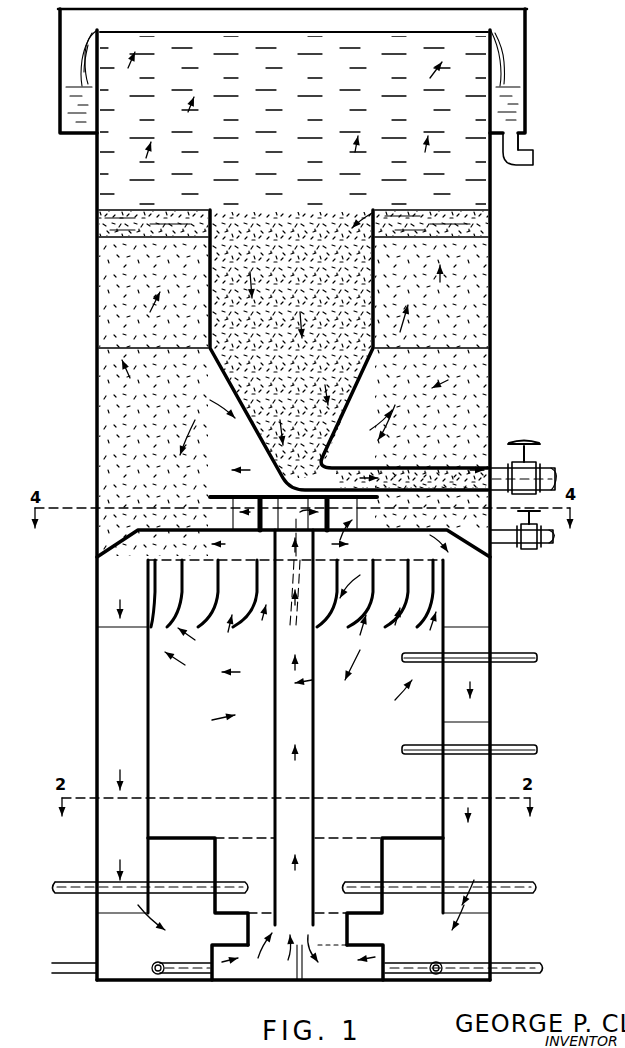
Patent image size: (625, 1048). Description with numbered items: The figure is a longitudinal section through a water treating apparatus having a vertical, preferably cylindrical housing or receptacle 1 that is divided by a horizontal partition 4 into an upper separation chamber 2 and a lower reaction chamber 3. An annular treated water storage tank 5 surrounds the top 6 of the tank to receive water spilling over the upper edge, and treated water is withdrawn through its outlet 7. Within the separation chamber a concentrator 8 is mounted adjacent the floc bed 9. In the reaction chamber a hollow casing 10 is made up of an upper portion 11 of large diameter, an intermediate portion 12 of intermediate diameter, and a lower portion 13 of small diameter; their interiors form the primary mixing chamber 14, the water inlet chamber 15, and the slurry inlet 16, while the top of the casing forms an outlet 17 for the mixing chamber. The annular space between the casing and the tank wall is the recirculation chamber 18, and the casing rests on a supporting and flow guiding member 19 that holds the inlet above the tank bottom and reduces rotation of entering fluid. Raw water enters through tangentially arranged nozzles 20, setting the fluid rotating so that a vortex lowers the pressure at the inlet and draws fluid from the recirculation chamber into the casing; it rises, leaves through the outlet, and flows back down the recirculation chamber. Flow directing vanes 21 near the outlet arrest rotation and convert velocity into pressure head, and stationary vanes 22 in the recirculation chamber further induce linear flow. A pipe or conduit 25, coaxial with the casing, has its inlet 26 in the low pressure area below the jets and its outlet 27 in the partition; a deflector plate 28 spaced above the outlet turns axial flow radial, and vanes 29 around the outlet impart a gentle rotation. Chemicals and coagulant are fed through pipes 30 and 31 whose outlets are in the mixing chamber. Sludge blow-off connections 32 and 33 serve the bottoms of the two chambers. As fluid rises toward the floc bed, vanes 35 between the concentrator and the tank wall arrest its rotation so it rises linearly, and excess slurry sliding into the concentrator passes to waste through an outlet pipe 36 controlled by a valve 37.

The vertical housing or receptacle 1 is at (492, 288).
The upper separation chamber 2 is at (472, 385).
The lower reaction chamber 3 is at (478, 610).
The horizontal partition 4 is at (494, 568).
The annular treated water storage tank 5 is at (527, 68).
The top 6 is at (495, 30).
The outlet 7 is at (525, 152).
The concentrator 8 is at (213, 222).
The floc bed 9 is at (475, 229).
The hollow casing 10 is at (447, 688).
The upper portion 11 is at (447, 722).
The intermediate portion 12 is at (386, 856).
The lower portion 13 is at (350, 930).
The primary mixing chamber 14 is at (392, 698).
The water inlet chamber 15 is at (344, 866).
The slurry inlet 16 is at (344, 940).
The outlet 17 is at (150, 565).
The recirculation chamber 18 is at (132, 742).
The supporting and flow guiding member 19 is at (262, 965).
The tangentially arranged nozzles 20 is at (68, 880).
The flow directing vanes 21 is at (220, 596).
The stationary vanes 22 is at (118, 693).
The pipe or conduit 25 is at (315, 660).
The inlet 26 is at (298, 918).
The outlet 27 is at (304, 532).
The deflector plate 28 is at (210, 494).
The vanes 29 is at (240, 515).
The pipe 30 is at (538, 746).
The pipe 31 is at (527, 652).
The sludge blow-off connection 32 is at (553, 538).
The sludge blow-off connection 33 is at (540, 963).
The vanes 35 is at (478, 338).
The outlet pipe 36 is at (480, 470).
The valve 37 is at (536, 462).